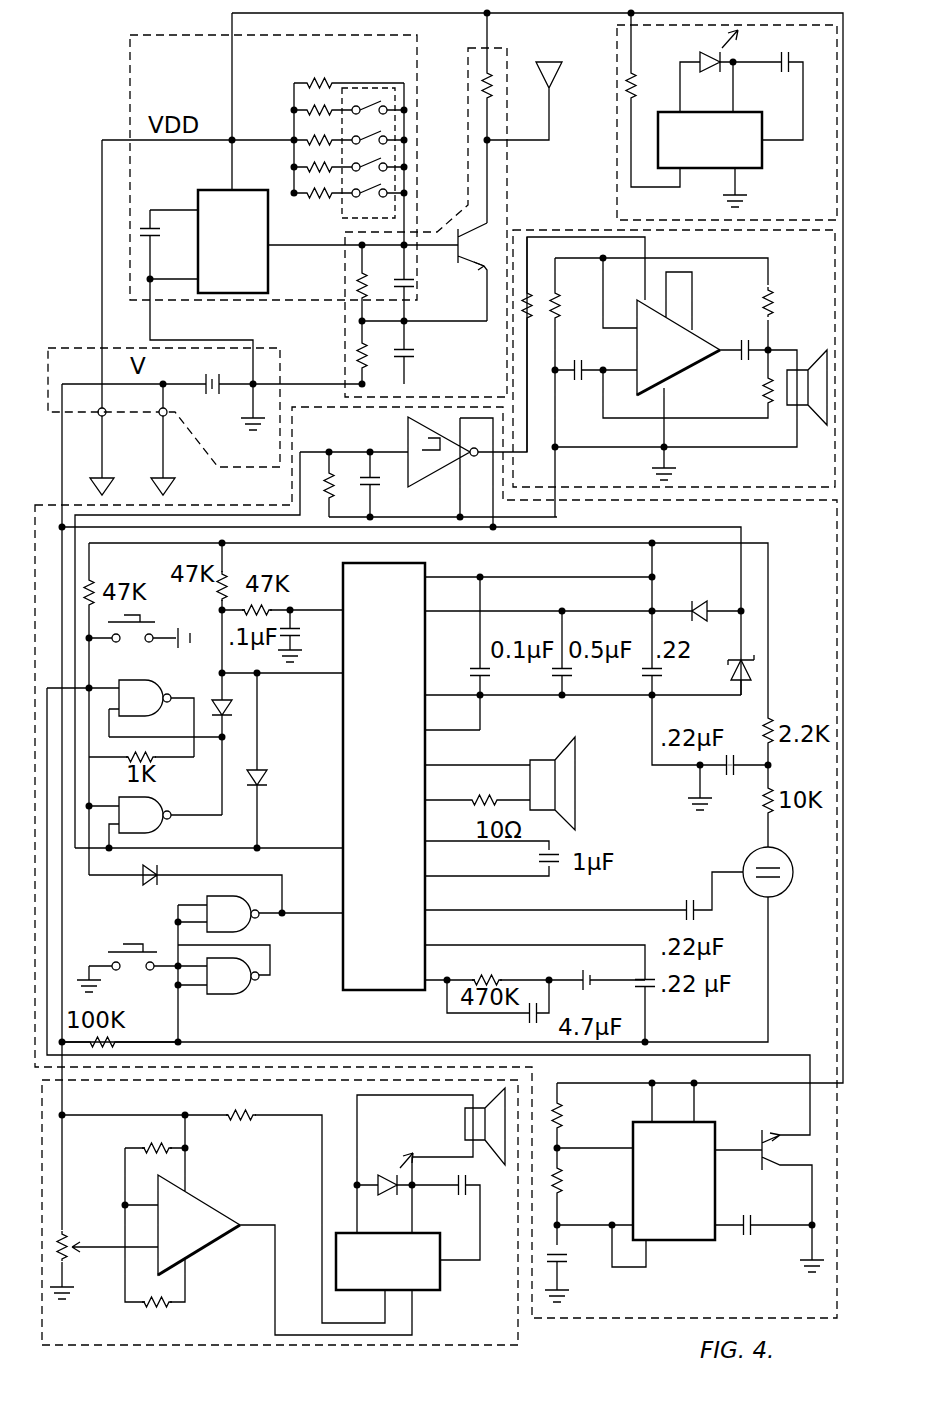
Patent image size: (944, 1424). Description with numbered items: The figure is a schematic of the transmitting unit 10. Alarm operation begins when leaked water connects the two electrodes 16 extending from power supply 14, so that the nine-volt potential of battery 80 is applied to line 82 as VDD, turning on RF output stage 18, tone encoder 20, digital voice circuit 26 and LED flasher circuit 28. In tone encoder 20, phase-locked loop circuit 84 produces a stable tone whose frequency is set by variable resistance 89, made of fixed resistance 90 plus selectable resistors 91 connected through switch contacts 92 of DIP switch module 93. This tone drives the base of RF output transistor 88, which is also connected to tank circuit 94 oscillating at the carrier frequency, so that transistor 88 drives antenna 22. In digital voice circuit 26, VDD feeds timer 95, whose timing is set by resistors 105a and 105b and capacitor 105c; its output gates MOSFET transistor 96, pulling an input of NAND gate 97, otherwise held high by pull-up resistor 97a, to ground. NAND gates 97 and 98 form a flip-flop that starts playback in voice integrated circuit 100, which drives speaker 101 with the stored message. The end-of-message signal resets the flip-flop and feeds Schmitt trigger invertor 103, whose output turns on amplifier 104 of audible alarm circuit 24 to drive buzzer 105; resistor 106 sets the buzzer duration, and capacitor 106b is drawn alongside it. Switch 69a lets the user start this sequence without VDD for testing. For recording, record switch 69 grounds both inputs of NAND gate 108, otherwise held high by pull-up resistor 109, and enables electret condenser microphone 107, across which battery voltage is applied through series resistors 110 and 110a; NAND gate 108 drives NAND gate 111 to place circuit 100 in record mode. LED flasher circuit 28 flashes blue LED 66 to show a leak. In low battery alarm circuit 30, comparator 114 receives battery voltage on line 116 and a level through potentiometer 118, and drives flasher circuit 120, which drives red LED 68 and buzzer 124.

The transmitting unit 10 is at (92, 232).
The power supply 14 is at (88, 348).
The electrodes 16 is at (102, 438).
The RF output stage 18 is at (345, 314).
The tone encoder 20 is at (130, 80).
The antenna 22 is at (551, 105).
The audible alarm circuit 24 is at (600, 230).
The digital voice circuit 26 is at (670, 1320).
The LED flasher circuit 28 is at (617, 70).
The low battery alarm circuit 30 is at (535, 1338).
The blue LED 66 is at (700, 55).
The red LED 68 is at (380, 1175).
The record switch 69 is at (128, 950).
The switch 69a is at (142, 620).
The battery 80 is at (212, 400).
The line 82 is at (102, 140).
The phase-locked loop circuit 84 is at (218, 293).
The RF output transistor 88 is at (462, 258).
The variable resistance 89 is at (398, 146).
The fixed resistance 90 is at (318, 80).
The selectable resistors 91 is at (294, 112).
The switch contacts 92 is at (383, 138).
The DIP switch module 93 is at (395, 195).
The tank circuit 94 is at (410, 360).
The timer 95 is at (690, 1245).
The MOSFET transistor 96 is at (752, 1142).
The NAND gate 97 is at (165, 685).
The pull-up resistor 97a is at (95, 578).
The NAND gate 98 is at (165, 800).
The voice integrated circuit 100 is at (343, 750).
The speaker 101 is at (578, 795).
The Schmitt trigger invertor 103 is at (408, 447).
The amplifier 104 is at (670, 376).
The buzzer 105 is at (820, 368).
The resistor 105a is at (592, 1118).
The resistor 105b is at (592, 1190).
The capacitor 105c is at (575, 1260).
The resistor 106 is at (332, 470).
The capacitor 106b is at (380, 488).
The electret condenser microphone 107 is at (745, 858).
The NAND gate 108 is at (240, 998).
The pull-up resistor 109 is at (727, 116).
The series resistor 110 is at (775, 815).
The series resistor 110a is at (772, 712).
The NAND gate 111 is at (250, 932).
The comparator 114 is at (212, 1210).
The line 116 is at (187, 1139).
The potentiometer 118 is at (80, 1247).
The flasher circuit 120 is at (420, 1216).
The buzzer 124 is at (465, 1125).